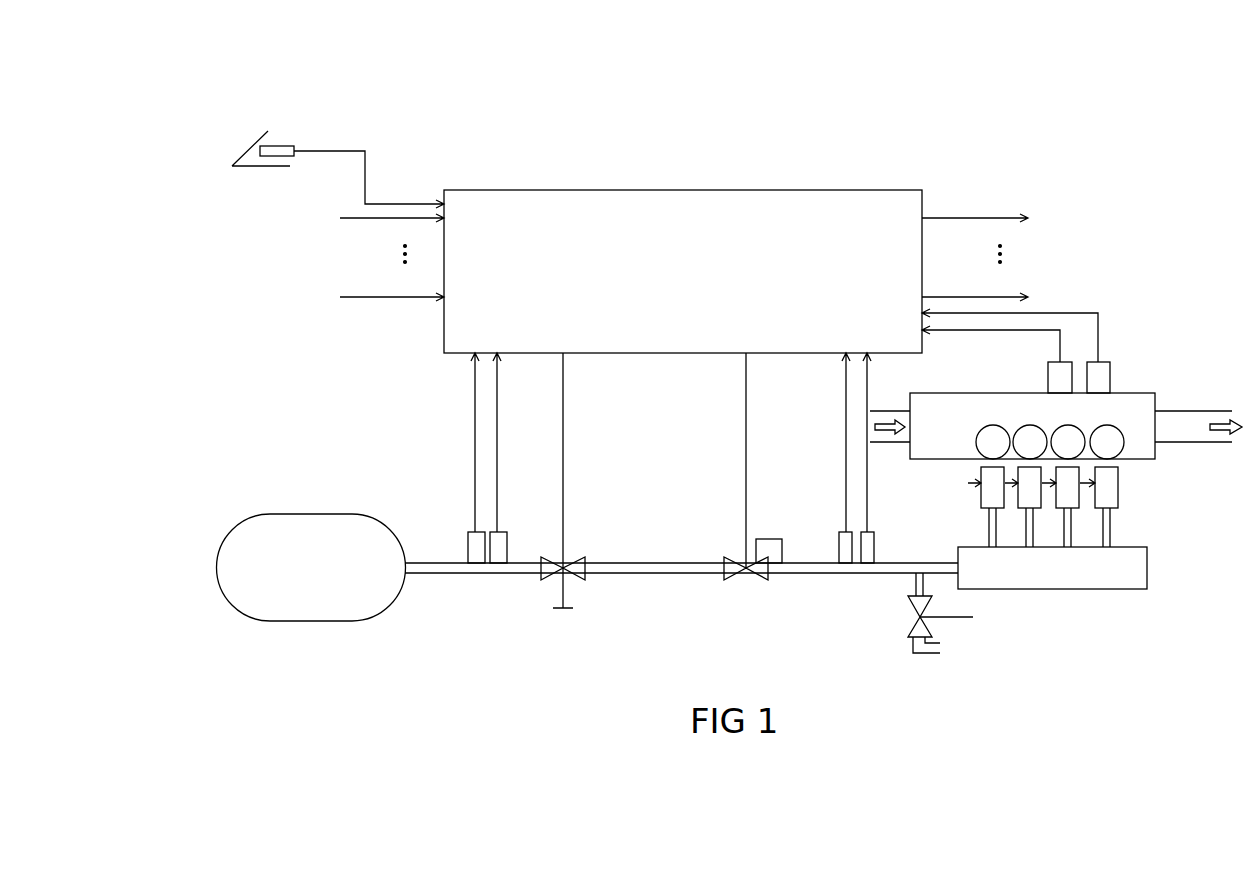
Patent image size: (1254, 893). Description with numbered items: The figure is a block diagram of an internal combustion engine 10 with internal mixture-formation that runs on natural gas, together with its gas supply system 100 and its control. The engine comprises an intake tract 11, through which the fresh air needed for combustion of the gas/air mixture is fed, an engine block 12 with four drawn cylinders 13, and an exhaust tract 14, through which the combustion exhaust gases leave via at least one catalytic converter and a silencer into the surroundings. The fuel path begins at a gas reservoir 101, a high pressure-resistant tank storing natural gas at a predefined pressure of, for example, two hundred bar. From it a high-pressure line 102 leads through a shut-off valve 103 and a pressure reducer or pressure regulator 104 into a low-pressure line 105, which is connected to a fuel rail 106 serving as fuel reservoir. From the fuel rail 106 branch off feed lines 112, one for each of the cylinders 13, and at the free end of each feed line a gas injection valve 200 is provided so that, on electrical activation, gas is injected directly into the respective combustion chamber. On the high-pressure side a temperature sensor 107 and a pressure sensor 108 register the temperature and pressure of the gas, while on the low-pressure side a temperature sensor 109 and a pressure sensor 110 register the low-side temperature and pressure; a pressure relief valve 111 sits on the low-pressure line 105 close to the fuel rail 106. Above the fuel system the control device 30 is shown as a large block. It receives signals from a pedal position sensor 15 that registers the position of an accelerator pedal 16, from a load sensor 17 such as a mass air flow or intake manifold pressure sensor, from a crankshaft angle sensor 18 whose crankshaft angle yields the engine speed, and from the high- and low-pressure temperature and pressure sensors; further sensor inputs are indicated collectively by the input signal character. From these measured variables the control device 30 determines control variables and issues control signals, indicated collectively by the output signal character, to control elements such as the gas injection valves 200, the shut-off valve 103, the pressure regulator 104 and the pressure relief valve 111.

The internal combustion engine 10 is at (1172, 366).
The intake tract 11 is at (877, 420).
The engine block 12 is at (1142, 403).
The cylinders 13 is at (1068, 440).
The exhaust tract 14 is at (1195, 428).
The pedal position sensor 15 is at (278, 146).
The accelerator pedal 16 is at (252, 148).
The load sensor 17 is at (1060, 378).
The crankshaft angle sensor 18 is at (1098, 372).
The control device 30 is at (847, 220).
The gas supply system 100 is at (398, 488).
The gas reservoir 101 is at (322, 600).
The high-pressure line 102 is at (498, 578).
The shut-off valve 103 is at (582, 562).
The pressure regulator 104 is at (740, 580).
The low-pressure line 105 is at (862, 578).
The fuel rail 106 is at (1107, 577).
The temperature sensor 107 is at (468, 540).
The pressure sensor 108 is at (507, 540).
The temperature sensor 109 is at (839, 540).
The pressure sensor 110 is at (873, 540).
The pressure relief valve 111 is at (912, 617).
The feed lines 112 is at (1112, 523).
The gas injection valve 200 is at (1120, 482).